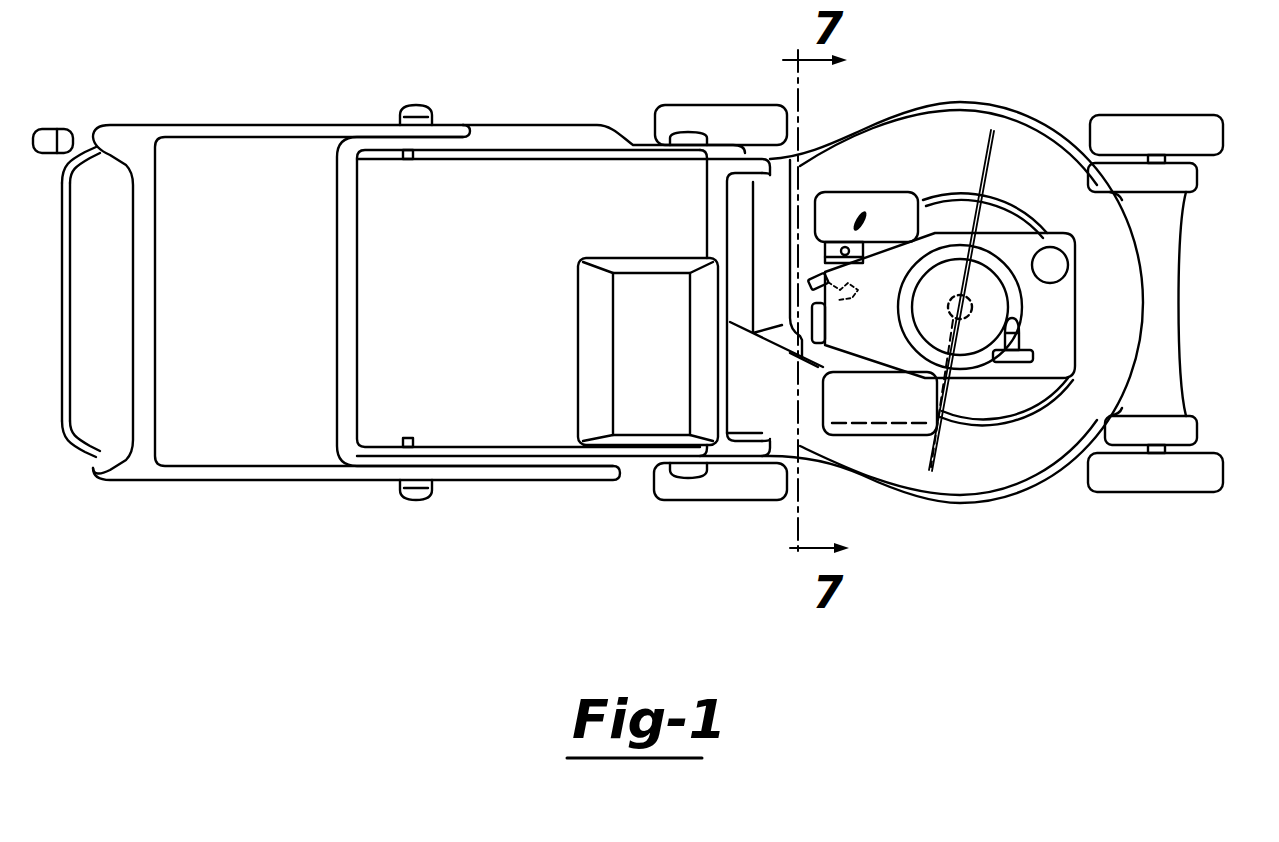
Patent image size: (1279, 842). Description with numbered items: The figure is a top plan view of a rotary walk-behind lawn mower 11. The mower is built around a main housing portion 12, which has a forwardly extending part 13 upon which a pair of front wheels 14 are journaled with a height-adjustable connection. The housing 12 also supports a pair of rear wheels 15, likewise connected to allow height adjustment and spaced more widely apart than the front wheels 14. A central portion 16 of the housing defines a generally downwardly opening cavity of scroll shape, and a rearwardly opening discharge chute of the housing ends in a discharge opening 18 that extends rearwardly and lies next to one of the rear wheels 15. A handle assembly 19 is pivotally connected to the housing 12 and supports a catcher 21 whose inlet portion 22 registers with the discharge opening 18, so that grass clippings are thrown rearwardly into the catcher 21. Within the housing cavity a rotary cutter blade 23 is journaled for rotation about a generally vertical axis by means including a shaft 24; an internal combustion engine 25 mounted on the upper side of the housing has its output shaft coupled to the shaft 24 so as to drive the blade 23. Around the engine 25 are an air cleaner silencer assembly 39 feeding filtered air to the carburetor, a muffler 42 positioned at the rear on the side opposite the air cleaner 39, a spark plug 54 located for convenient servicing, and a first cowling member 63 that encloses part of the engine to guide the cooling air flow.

The lawn mower 11 is at (1112, 85).
The main housing portion 12 is at (965, 98).
The forwardly extending part 13 is at (1185, 305).
The front wheels 14 is at (1205, 135).
The rear wheels 15 is at (766, 112).
The central portion 16 is at (837, 450).
The discharge opening 18 is at (718, 378).
The handle assembly 19 is at (292, 128).
The catcher 21 is at (508, 415).
The inlet portion 22 is at (643, 417).
The rotary cutter blade 23 is at (995, 152).
The shaft 24 is at (955, 297).
The internal combustion engine 25 is at (980, 393).
The air cleaner silencer assembly 39 is at (888, 207).
The muffler 42 is at (907, 417).
The spark plug 54 is at (810, 280).
The first cowling member 63 is at (1055, 362).